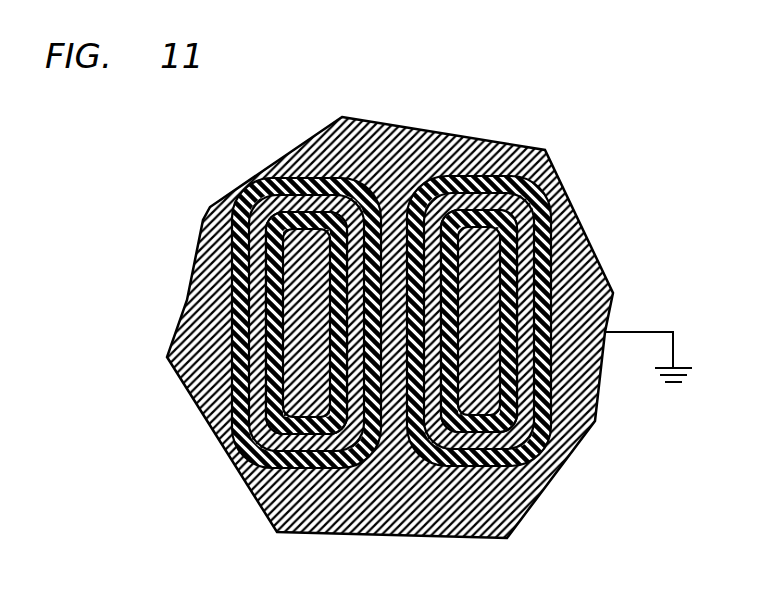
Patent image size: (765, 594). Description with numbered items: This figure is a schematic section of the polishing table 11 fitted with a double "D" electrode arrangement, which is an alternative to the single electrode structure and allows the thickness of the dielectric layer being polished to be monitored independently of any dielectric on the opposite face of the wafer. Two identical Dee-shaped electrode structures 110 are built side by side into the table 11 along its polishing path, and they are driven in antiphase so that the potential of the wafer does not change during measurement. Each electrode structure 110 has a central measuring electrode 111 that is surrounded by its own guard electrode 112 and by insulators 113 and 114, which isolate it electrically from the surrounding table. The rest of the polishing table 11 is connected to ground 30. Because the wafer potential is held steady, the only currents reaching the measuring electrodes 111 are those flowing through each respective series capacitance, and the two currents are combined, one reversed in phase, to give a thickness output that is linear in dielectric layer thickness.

The electrode structure 110 is at (380, 61).
The polishing table 11 is at (545, 462).
The measuring electrode 111 is at (322, 262).
The guard electrode 112 is at (262, 246).
The insulator 113 is at (270, 333).
The insulator 114 is at (252, 280).
The ground 30 is at (613, 340).